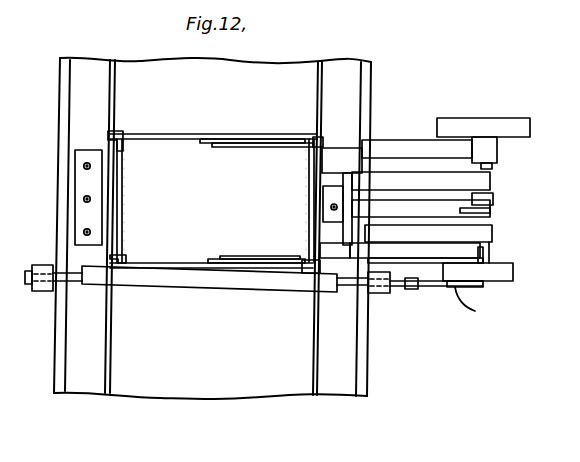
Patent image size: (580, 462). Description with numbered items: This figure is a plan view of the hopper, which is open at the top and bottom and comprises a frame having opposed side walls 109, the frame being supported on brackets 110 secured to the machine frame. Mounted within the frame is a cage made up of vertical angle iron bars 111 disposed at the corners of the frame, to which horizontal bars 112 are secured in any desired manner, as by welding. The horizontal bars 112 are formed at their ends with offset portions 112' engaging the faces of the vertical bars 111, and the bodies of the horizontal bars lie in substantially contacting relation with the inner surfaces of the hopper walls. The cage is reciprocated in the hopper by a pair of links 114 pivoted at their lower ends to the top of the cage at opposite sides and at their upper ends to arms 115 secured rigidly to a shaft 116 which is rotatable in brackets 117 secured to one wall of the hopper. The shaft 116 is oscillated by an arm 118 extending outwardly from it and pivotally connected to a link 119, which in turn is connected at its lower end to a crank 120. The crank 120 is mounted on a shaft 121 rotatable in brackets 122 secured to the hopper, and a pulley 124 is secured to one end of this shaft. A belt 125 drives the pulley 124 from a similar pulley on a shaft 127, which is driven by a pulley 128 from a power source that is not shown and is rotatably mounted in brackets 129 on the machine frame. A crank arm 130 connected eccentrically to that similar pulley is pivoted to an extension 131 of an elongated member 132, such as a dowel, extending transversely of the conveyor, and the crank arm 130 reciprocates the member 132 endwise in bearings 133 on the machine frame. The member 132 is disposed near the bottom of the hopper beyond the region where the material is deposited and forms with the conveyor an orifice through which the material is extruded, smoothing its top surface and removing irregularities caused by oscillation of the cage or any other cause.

The side walls 109 is at (110, 147).
The brackets 110 is at (86, 186).
The vertical angle iron bars 111 is at (110, 134).
The horizontal bars 112 is at (215, 201).
The offset portions 112' is at (138, 246).
The links 114 is at (195, 138).
The arms 115 is at (253, 148).
The shaft 116 is at (342, 193).
The brackets 117 is at (348, 160).
The arm 118 is at (390, 208).
The link 119 is at (490, 211).
The crank 120 is at (493, 200).
The shaft 121 is at (492, 253).
The brackets 122 is at (475, 182).
The pulley 124 is at (515, 263).
The belt 125 is at (516, 273).
The shaft 127 is at (493, 167).
The pulley 128 is at (520, 128).
The brackets 129 is at (412, 142).
The crank arm 130 is at (482, 304).
The extension 131 is at (400, 289).
The elongated member 132 is at (223, 281).
The bearings 133 is at (42, 284).